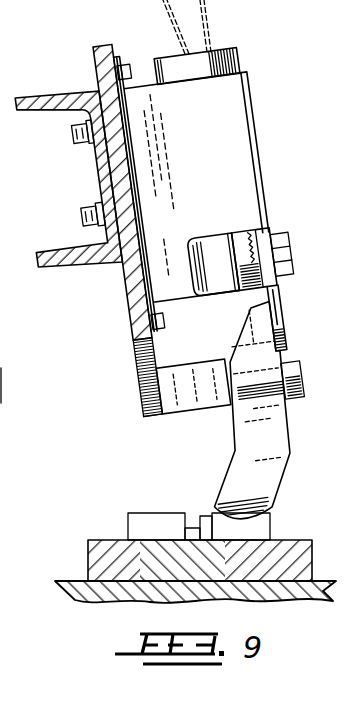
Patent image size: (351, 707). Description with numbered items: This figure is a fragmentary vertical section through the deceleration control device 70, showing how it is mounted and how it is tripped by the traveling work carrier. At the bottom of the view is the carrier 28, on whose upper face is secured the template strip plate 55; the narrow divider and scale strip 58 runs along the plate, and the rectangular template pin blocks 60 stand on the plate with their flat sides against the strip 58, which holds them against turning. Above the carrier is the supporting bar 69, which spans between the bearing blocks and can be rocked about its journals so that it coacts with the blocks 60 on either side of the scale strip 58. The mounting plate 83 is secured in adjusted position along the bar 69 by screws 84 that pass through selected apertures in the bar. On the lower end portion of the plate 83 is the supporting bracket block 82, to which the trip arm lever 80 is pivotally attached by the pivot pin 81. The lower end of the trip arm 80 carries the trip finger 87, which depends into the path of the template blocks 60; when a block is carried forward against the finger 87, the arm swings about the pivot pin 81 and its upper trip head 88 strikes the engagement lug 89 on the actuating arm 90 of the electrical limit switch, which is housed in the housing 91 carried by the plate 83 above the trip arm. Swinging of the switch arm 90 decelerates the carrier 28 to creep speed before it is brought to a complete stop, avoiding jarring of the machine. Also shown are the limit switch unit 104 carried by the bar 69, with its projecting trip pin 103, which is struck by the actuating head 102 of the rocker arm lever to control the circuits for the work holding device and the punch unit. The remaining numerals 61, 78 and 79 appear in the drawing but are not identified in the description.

The actuator mounting assembly 61 is at (41, 64).
The deceleration control device 70 is at (251, 86).
The screws 84 is at (70, 136).
The supporting bar 69 is at (93, 173).
The housing 91 is at (240, 190).
The limit switch unit 104 is at (350, 137).
The trip pin 103 is at (290, 246).
The actuating head 102 is at (268, 261).
The actuating arm 90 is at (283, 303).
The trip head 88 is at (240, 329).
The engagement lug 89 is at (233, 343).
The mounting plate 83 is at (135, 327).
The link 78 is at (10, 374).
The link 79 is at (10, 427).
The supporting bracket block 82 is at (192, 410).
The pivot pin 81 is at (300, 376).
The trip arm lever 80 is at (275, 436).
The trip finger 87 is at (272, 504).
The template pin blocks 60 is at (153, 513).
The divider and scale strip 58 is at (197, 518).
The template strip plate 55 is at (308, 554).
The carrier 28 is at (320, 588).